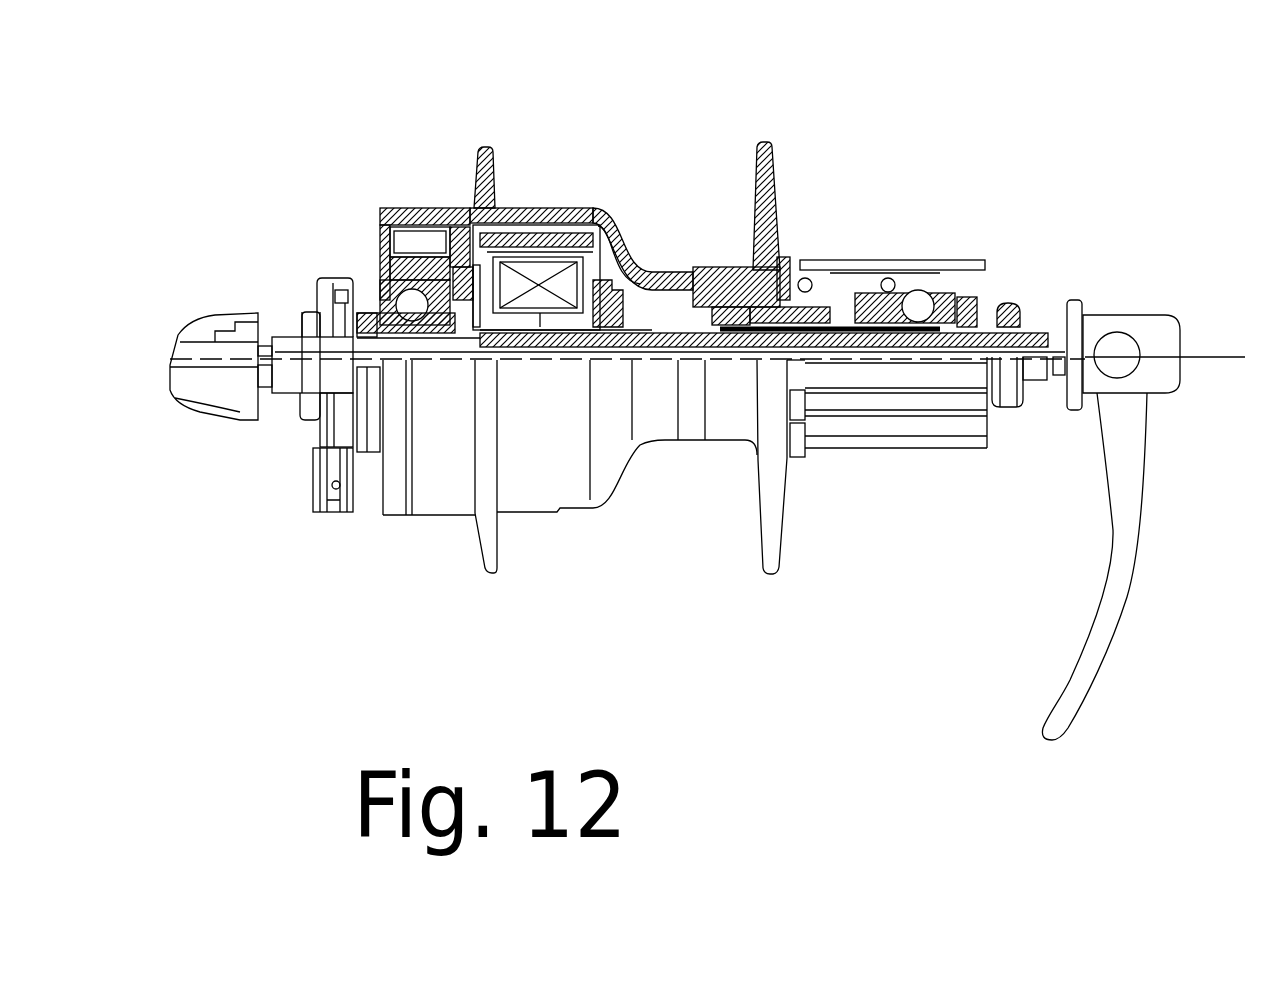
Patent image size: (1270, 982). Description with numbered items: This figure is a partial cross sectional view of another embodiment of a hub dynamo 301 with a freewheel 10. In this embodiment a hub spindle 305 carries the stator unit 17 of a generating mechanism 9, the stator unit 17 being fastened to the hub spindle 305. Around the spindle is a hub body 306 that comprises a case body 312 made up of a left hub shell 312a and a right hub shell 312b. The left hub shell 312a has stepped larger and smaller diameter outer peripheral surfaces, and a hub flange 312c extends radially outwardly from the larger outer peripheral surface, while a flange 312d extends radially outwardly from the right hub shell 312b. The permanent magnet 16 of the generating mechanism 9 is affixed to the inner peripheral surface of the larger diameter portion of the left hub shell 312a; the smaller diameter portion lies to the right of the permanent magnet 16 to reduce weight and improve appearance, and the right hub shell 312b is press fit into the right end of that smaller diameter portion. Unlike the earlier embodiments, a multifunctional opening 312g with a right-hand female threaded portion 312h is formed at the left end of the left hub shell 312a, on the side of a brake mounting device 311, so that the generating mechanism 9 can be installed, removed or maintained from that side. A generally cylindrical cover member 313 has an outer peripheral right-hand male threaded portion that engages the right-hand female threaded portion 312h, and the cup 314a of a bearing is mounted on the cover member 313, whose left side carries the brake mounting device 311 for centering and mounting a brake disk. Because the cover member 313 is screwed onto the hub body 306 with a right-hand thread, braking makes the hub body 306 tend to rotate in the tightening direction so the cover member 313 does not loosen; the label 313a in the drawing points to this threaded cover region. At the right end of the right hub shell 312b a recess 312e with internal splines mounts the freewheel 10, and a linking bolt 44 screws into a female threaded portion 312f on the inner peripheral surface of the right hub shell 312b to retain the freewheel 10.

The generating mechanism 9 is at (595, 255).
The freewheel 10 is at (890, 250).
The permanent magnet 16 is at (512, 232).
The stator unit 17 is at (565, 348).
The linking bolt 44 is at (803, 362).
The hub dynamo 301 is at (608, 155).
The hub spindle 305 is at (1033, 327).
The hub body 306 is at (632, 258).
The brake mounting device 311 is at (378, 218).
The case body 312 is at (643, 268).
The left hub shell 312a is at (537, 215).
The right hub shell 312b is at (718, 282).
The hub flange 312c is at (486, 147).
The flange 312d is at (762, 142).
The recess 312e is at (786, 270).
The female threaded portion 312f is at (718, 330).
The multifunctional opening 312g is at (441, 212).
The right-hand female threaded portion 312h is at (413, 282).
The cover member 313 is at (393, 210).
The seal lip 313a is at (408, 217).
The cup 314a is at (377, 262).